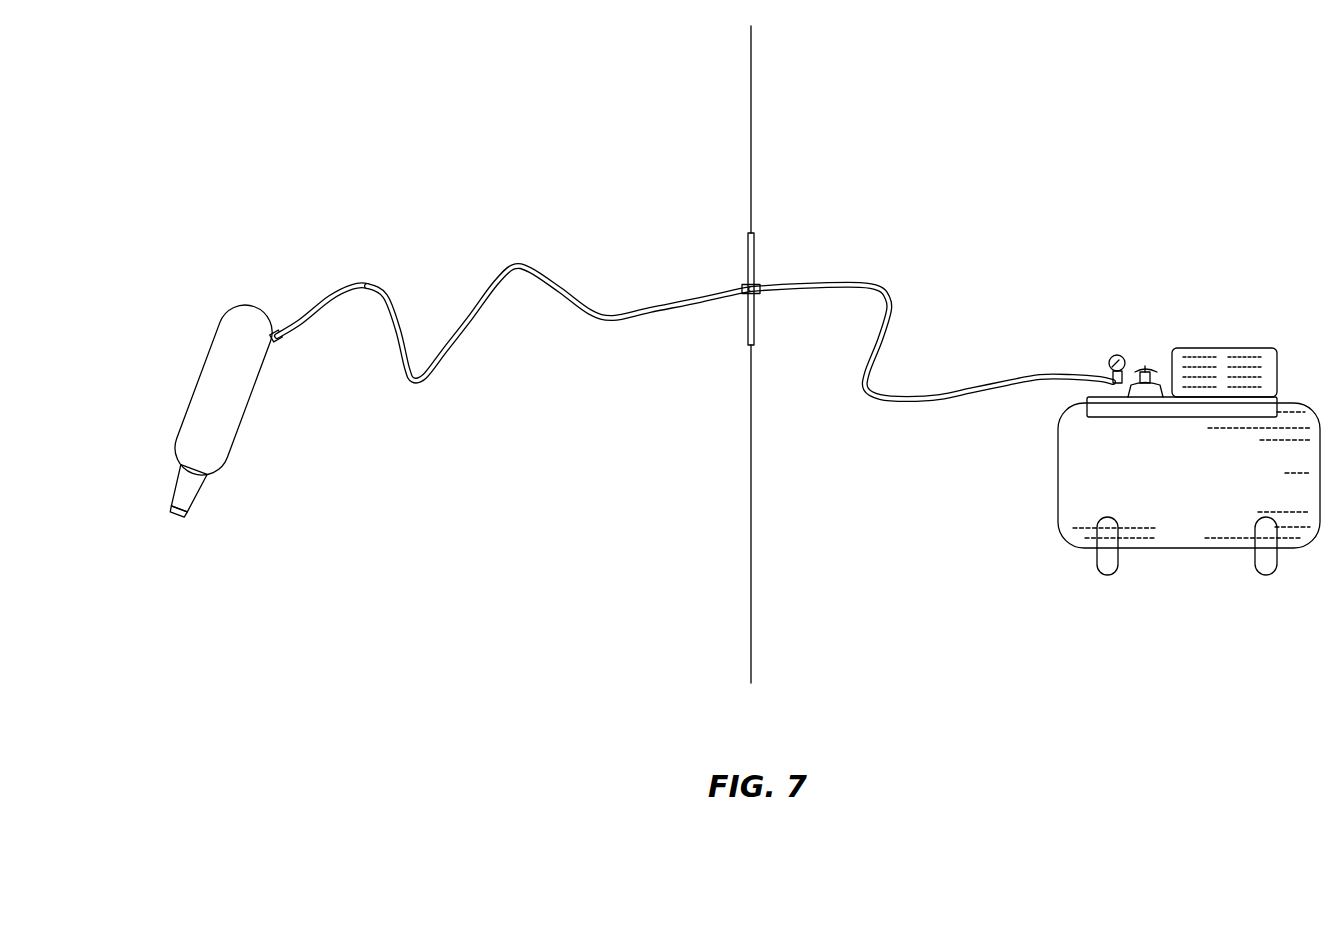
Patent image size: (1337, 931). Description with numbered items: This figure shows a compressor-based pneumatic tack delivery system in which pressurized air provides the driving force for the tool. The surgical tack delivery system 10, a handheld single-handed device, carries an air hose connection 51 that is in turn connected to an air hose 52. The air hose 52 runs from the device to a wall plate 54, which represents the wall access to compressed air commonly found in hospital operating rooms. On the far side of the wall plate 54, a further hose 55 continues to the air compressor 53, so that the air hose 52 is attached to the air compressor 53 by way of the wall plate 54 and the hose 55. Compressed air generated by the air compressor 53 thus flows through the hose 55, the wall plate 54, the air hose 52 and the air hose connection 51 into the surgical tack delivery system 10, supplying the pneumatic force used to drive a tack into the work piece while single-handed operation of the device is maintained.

The surgical tack delivery system 10 is at (203, 398).
The air hose connection 51 is at (277, 327).
The air hose 52 is at (513, 265).
The air compressor 53 is at (1098, 465).
The wall plate 54 is at (747, 253).
The hose 55 is at (887, 293).